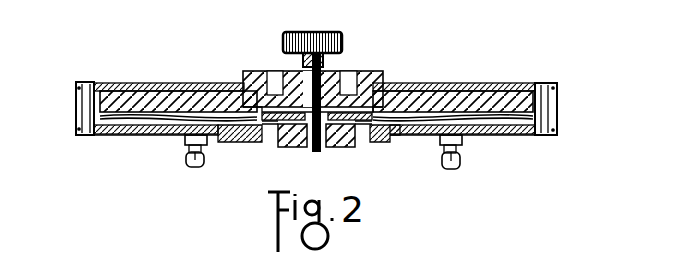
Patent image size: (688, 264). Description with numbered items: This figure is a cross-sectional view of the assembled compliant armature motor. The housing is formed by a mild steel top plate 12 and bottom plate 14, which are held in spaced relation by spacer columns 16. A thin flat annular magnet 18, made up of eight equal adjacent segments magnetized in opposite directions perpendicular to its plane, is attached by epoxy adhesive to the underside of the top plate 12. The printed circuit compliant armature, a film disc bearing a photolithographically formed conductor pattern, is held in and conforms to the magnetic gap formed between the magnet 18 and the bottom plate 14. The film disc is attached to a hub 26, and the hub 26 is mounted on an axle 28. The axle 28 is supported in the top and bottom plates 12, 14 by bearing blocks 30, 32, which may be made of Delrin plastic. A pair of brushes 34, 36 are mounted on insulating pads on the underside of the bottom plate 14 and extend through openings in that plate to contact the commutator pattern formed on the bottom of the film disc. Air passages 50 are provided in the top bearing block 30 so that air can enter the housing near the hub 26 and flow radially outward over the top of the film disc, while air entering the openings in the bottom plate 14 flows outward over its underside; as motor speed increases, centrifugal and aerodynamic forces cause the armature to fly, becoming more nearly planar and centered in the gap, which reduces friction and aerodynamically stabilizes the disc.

The top plate 12 is at (520, 83).
The bottom plate 14 is at (317, 153).
The spacer columns 16 is at (557, 115).
The annular magnet 18 is at (140, 84).
The hub 26 is at (272, 138).
The axle 28 is at (280, 71).
The bearing block 30 is at (392, 68).
The bearing block 32 is at (327, 138).
The brush 34 is at (217, 142).
The brush 36 is at (400, 147).
The air passages 50 is at (246, 71).